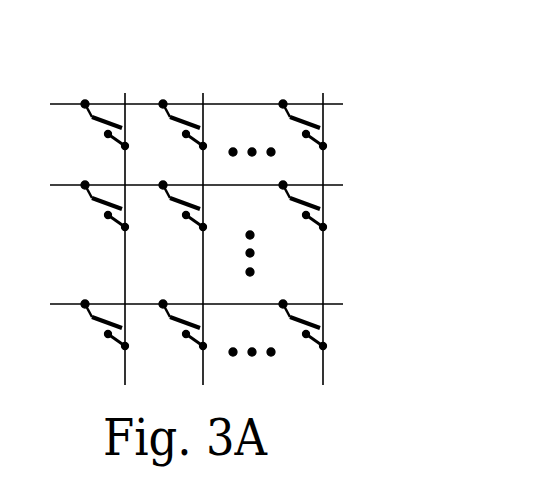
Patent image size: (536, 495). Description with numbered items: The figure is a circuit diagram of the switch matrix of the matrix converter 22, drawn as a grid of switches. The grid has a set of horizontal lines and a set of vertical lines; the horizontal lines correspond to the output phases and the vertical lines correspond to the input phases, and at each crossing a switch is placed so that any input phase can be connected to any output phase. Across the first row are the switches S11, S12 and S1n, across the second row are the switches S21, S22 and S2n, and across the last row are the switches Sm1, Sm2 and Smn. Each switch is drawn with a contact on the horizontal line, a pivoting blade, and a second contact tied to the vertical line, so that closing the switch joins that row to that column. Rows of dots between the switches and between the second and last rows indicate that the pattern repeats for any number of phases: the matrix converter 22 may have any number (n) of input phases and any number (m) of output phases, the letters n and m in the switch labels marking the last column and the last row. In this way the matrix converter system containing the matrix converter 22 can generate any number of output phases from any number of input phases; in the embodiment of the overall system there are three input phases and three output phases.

The matrix converter 22 is at (258, 192).
The switch S11 is at (92, 125).
The switch S12 is at (170, 125).
The switch S1n is at (295, 125).
The switch S21 is at (92, 206).
The switch S22 is at (170, 206).
The switch S2n is at (295, 206).
The switch Sm1 is at (91, 325).
The switch Sm2 is at (169, 325).
The switch Smn is at (293, 325).